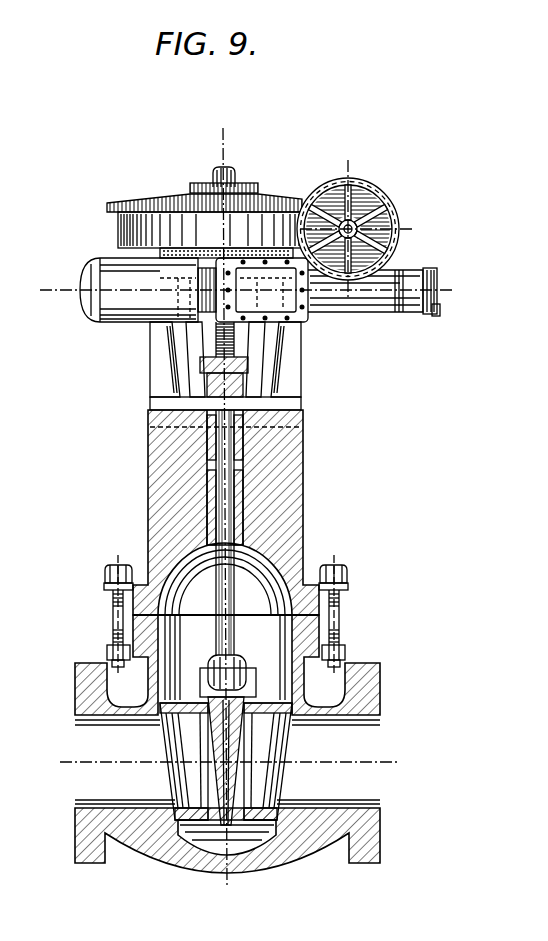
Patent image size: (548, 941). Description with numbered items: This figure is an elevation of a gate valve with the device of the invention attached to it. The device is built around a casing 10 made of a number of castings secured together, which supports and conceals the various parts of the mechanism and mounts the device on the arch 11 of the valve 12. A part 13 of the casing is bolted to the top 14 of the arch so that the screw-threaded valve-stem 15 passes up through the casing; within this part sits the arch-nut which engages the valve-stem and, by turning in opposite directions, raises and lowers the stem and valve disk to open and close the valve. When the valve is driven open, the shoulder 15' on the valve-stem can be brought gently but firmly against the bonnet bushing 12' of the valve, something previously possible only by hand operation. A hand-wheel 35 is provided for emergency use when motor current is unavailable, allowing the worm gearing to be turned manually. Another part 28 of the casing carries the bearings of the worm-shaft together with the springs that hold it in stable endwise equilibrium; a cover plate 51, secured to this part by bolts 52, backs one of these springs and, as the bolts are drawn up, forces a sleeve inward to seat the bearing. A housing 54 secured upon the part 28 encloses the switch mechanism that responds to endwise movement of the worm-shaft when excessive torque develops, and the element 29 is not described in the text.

The casing 10 is at (120, 223).
The arch 11 is at (290, 365).
The valve 12 is at (239, 512).
The bonnet bushing 12' is at (225, 625).
The part of the casing 13 is at (198, 252).
The top of the arch 14 is at (163, 280).
The screw-threaded valve-stem 15 is at (245, 171).
The shoulder 15' is at (239, 665).
The part of the casing 28 is at (372, 302).
The cylinder 29 is at (110, 283).
The hand-wheel 35 is at (393, 208).
The cover plate 51 is at (437, 289).
The bolts 52 is at (438, 310).
The housing 54 is at (253, 290).